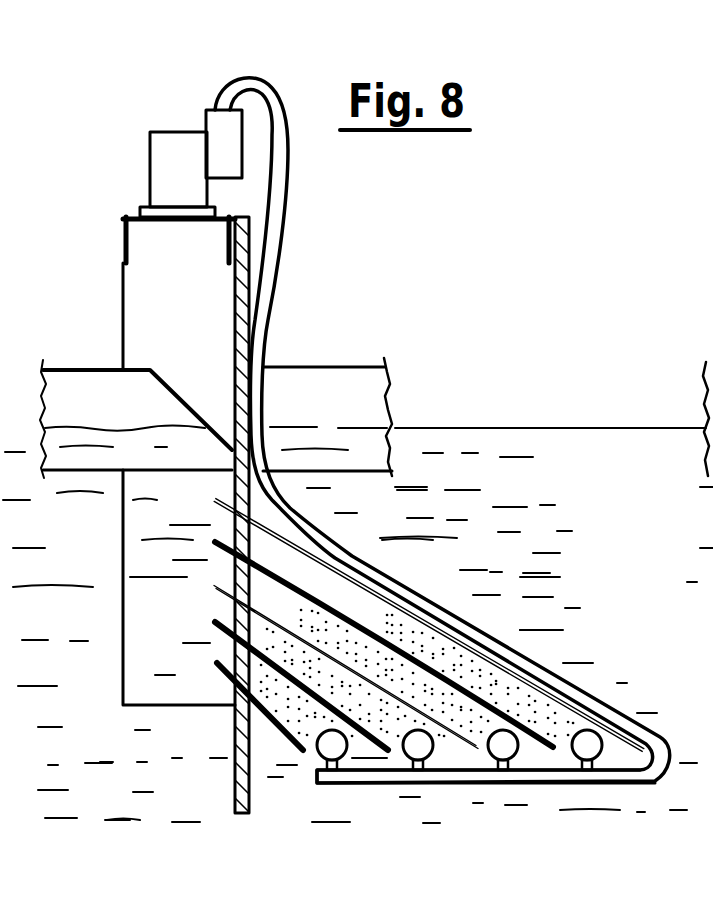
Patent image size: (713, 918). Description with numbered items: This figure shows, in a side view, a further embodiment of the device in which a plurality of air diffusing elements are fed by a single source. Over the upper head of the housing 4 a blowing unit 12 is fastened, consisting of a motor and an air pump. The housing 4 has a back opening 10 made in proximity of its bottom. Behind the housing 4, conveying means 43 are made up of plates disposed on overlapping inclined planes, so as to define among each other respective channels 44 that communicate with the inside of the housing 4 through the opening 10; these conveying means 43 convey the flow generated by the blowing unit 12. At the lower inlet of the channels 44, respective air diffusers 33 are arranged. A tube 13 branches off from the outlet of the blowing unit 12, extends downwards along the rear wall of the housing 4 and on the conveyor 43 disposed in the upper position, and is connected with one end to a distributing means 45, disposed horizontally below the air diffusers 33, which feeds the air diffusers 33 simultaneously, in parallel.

The housing 4 is at (122, 245).
The blowing unit 12 is at (160, 175).
The tube 13 is at (265, 292).
The back opening 10 is at (233, 690).
The channels 44 is at (357, 612).
The conveying means 43 is at (521, 667).
The distributing means 45 is at (373, 775).
The air diffusers 33 is at (505, 745).